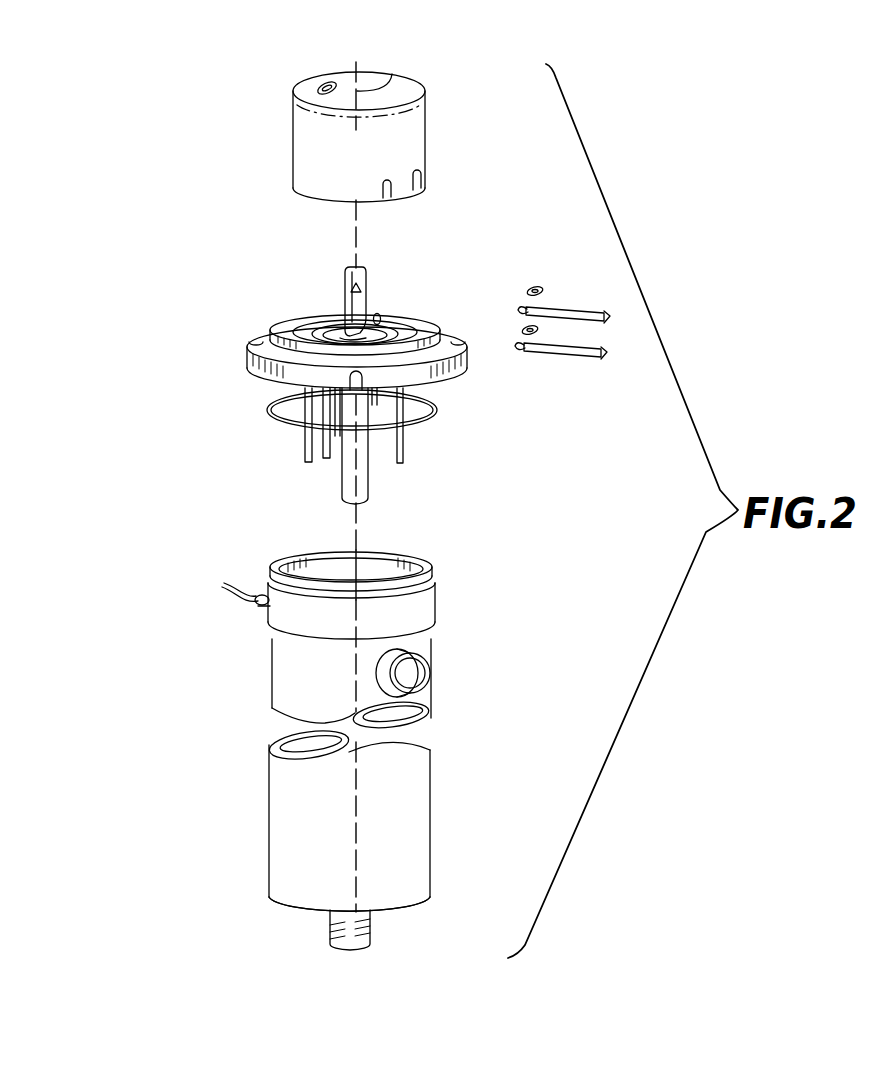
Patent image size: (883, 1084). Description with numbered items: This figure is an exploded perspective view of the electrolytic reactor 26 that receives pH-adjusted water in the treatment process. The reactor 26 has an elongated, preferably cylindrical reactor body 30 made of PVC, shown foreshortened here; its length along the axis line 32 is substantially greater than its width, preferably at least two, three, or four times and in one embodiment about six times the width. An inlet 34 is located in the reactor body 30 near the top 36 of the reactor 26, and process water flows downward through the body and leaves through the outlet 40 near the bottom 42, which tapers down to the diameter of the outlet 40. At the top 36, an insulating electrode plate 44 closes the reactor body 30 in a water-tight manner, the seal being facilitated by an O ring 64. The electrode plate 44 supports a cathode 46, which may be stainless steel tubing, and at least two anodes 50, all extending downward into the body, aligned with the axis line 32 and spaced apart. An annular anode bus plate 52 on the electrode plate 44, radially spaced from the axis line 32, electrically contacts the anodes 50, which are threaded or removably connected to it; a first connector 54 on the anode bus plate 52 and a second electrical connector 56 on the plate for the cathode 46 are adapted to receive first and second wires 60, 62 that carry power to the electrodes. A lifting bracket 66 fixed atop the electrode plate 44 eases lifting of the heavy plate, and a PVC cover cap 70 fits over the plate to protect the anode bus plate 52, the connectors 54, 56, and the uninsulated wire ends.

The electrolytic reactor 26 is at (544, 566).
The reactor body 30 is at (270, 668).
The axis line 32 is at (392, 74).
The inlet 34 is at (436, 672).
The top 36 is at (430, 556).
The outlet 40 is at (372, 940).
The bottom 42 is at (430, 893).
The insulating electrode plate 44 is at (262, 338).
The cathode 46 is at (368, 488).
The anodes 50 is at (306, 458).
The annular anode bus plate 52 is at (414, 322).
The first connector 54 is at (378, 314).
The second electrical connector 56 is at (330, 320).
The first wire 60 is at (578, 314).
The second wire 62 is at (558, 356).
The O ring 64 is at (432, 418).
The lifting bracket 66 is at (346, 282).
The cover cap 70 is at (290, 160).